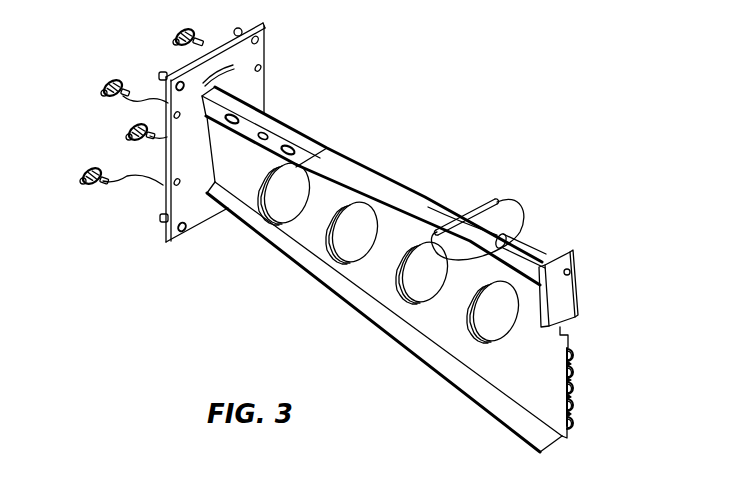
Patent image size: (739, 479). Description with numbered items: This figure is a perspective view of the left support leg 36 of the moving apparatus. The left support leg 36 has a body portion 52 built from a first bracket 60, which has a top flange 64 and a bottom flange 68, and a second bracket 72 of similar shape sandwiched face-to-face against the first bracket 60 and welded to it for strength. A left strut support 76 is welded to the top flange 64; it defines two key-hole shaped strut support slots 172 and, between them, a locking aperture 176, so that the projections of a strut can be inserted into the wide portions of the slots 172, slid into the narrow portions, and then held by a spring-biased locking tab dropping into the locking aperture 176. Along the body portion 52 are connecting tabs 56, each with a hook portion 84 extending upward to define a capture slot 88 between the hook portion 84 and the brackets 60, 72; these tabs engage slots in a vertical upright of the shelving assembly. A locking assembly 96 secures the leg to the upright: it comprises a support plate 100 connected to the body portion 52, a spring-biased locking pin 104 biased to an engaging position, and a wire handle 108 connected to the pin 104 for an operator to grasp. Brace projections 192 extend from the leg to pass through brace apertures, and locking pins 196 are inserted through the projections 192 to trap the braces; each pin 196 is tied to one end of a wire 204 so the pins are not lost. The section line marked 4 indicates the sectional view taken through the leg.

The section line 4- 4 is at (128, 197).
The left support leg 36 is at (524, 112).
The body portion 52 is at (385, 254).
The connecting tabs 56 is at (580, 386).
The first bracket 60 is at (470, 353).
The top flange 64 is at (398, 194).
The bottom flange 68 is at (517, 436).
The second bracket 72 is at (369, 172).
The left strut support 76 is at (263, 118).
The hook portion 84 is at (572, 356).
The capture slot 88 is at (574, 393).
The locking assembly 96 is at (528, 243).
The support plate 100 is at (565, 292).
The locking pin 104 is at (513, 236).
The wire handle 108 is at (466, 210).
The strut support slots 172 is at (237, 116).
The locking aperture 176 is at (266, 134).
The brace projections 192 is at (161, 74).
The locking pins 196 is at (176, 33).
The wire 204 is at (150, 100).